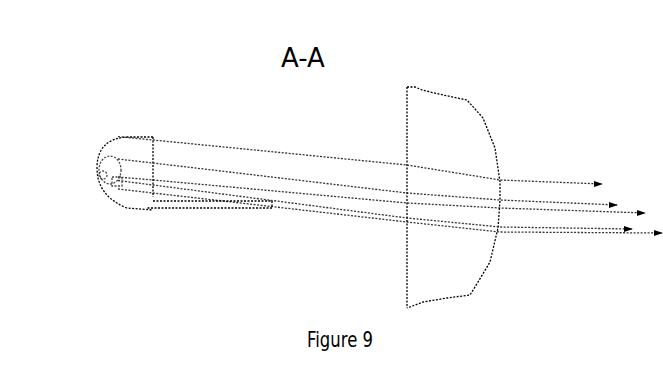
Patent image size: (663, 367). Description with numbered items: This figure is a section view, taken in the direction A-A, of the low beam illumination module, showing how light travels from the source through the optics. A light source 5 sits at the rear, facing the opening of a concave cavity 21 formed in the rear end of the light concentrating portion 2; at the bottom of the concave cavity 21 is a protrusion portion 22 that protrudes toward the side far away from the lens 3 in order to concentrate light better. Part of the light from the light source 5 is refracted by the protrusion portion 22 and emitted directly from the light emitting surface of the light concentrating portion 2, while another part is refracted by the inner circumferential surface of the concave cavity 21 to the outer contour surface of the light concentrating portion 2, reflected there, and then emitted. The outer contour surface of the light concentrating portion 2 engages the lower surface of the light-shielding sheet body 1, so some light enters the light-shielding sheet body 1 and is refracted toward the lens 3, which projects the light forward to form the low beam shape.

The light-shielding sheet body 1 is at (173, 208).
The light concentrating portion 2 is at (135, 153).
The concave cavity 21 is at (103, 161).
The protrusion portion 22 is at (117, 182).
The light source 5 is at (97, 177).
The lens 3 is at (463, 143).